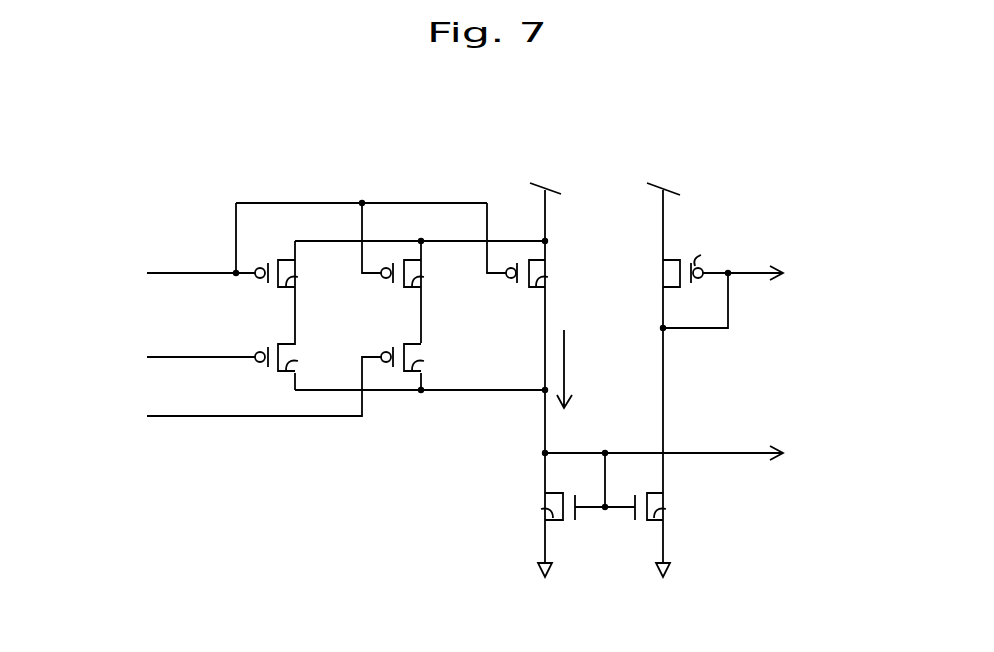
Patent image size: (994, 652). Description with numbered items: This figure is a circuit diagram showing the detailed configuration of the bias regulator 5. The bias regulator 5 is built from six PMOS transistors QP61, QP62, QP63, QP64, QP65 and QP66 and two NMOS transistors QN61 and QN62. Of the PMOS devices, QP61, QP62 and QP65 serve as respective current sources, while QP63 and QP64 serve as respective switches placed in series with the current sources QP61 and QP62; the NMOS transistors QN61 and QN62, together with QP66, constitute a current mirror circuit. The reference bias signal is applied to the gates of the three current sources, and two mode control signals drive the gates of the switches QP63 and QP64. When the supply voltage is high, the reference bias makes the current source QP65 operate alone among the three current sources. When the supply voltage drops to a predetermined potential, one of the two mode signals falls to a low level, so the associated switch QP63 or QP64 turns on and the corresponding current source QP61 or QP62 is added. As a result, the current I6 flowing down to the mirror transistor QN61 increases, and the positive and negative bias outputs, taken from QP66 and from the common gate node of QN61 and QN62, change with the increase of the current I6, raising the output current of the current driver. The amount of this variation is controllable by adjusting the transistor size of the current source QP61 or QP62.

The bias regulator 5 is at (199, 144).
The PMOS transistor QP61 is at (305, 274).
The PMOS transistor QP62 is at (430, 274).
The PMOS transistor QP63 is at (305, 358).
The PMOS transistor QP64 is at (430, 358).
The PMOS transistor QP65 is at (555, 274).
The PMOS transistor QP66 is at (700, 254).
The NMOS transistor QN61 is at (529, 508).
The NMOS transistor QN62 is at (681, 508).
The current I6 is at (566, 359).